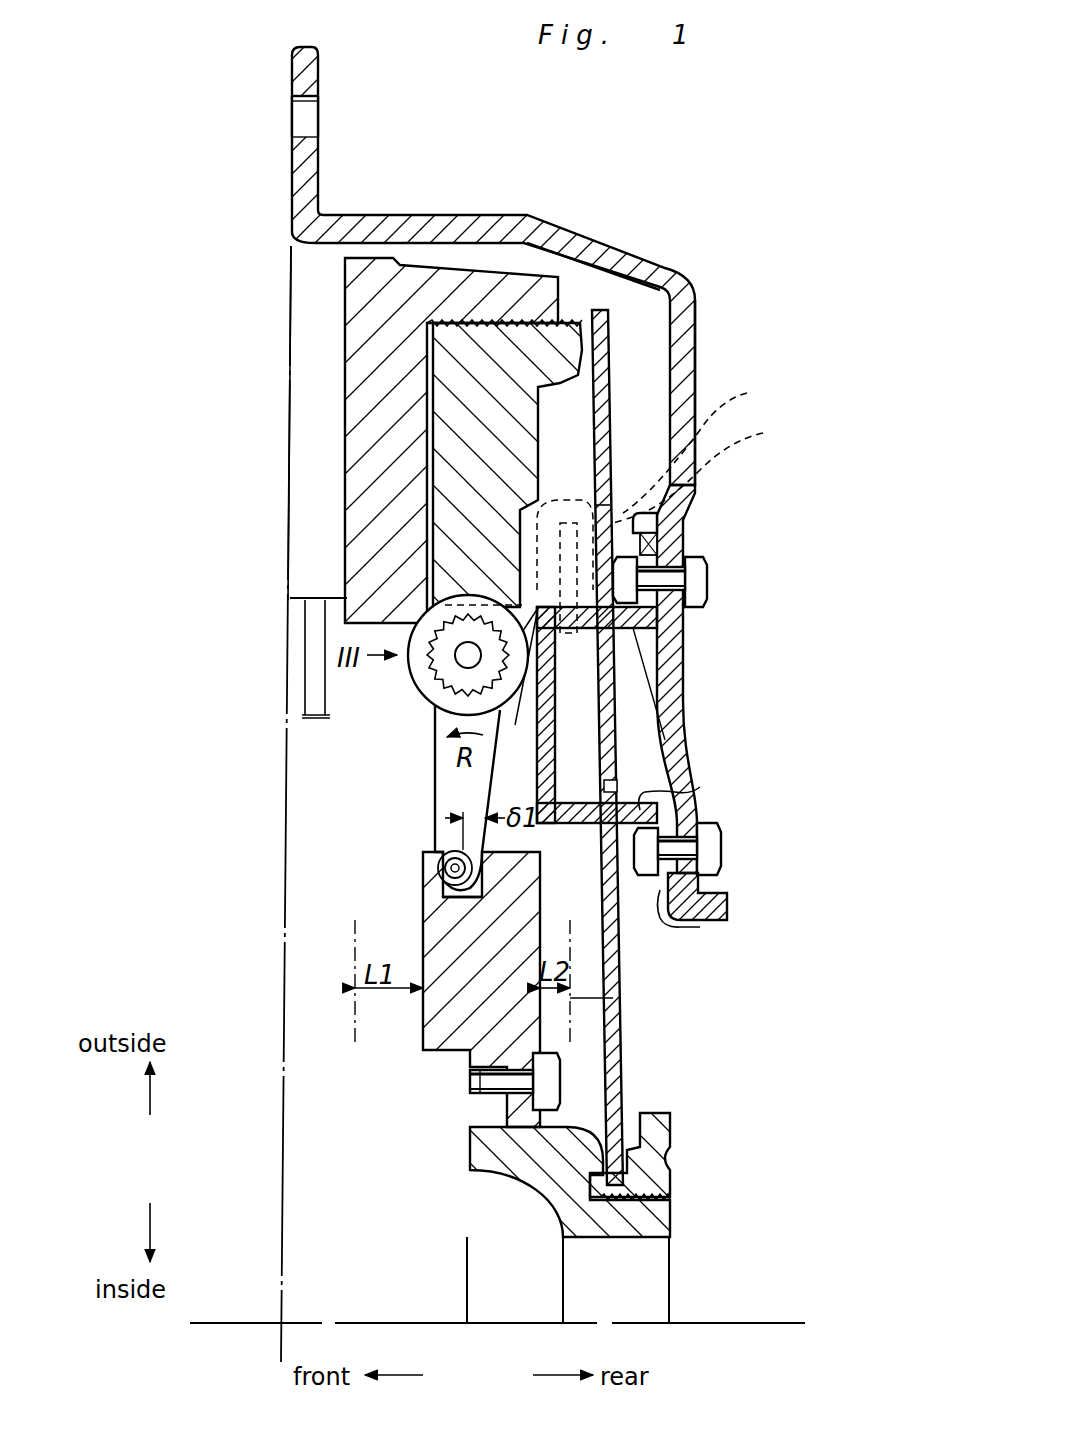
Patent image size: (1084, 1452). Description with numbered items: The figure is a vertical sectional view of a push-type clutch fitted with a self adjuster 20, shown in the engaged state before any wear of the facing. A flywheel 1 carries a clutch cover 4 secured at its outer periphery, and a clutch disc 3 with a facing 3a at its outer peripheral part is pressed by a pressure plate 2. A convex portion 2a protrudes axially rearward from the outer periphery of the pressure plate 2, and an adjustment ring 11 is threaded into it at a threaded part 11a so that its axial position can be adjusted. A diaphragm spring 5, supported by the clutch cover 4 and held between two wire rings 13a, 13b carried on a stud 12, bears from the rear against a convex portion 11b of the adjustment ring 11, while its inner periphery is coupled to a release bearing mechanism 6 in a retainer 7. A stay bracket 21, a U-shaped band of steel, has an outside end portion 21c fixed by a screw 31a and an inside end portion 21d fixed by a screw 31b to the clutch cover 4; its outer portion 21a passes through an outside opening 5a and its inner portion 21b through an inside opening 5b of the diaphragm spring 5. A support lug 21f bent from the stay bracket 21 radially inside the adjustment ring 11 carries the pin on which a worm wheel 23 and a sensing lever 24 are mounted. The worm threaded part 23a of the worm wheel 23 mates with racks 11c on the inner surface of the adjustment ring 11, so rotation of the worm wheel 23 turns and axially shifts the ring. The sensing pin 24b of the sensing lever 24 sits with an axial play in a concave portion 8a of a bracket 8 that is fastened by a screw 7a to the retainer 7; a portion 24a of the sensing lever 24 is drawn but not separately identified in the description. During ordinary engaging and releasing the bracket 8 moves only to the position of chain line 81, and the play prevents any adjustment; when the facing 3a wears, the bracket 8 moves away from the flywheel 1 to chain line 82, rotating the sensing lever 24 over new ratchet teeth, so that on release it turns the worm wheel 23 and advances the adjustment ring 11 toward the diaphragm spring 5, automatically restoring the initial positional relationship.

The flywheel 1 is at (270, 400).
The pressure plate 2 is at (430, 258).
The convex portion 2a is at (500, 292).
The clutch disc 3 is at (300, 655).
The facing 3a is at (292, 346).
The clutch cover 4 is at (513, 217).
The diaphragm spring 5 is at (630, 953).
The outside opening 5a is at (615, 632).
The inside opening 5b is at (613, 786).
The release bearing mechanism 6 is at (680, 1197).
The retainer 7 is at (477, 1137).
The screw 7a is at (547, 1082).
The bracket 8 is at (437, 1058).
The concave portion 8a is at (467, 902).
The adjustment ring 11 is at (542, 415).
The threaded part 11a is at (527, 305).
The convex portion 11b is at (697, 340).
The racks 11c is at (493, 580).
The stud 12 is at (565, 555).
The wire ring 13a is at (712, 444).
The wire ring 13b is at (716, 470).
The self adjuster 20 is at (433, 772).
The stay bracket 21 is at (683, 713).
The outer portion 21a is at (565, 717).
The inner portion 21b is at (700, 787).
The outside end portion 21c is at (690, 520).
The inside end portion 21d is at (667, 923).
The support lug 21f is at (515, 725).
The worm wheel 23 is at (407, 693).
The worm threaded part 23a is at (413, 600).
The sensing lever 24 is at (443, 795).
The pivot pin 24a is at (440, 862).
The sensing pin 24b is at (455, 898).
The screw 31a is at (700, 580).
The screw 31b is at (710, 850).
The chain line 81 is at (355, 997).
The chain line 82 is at (623, 1000).